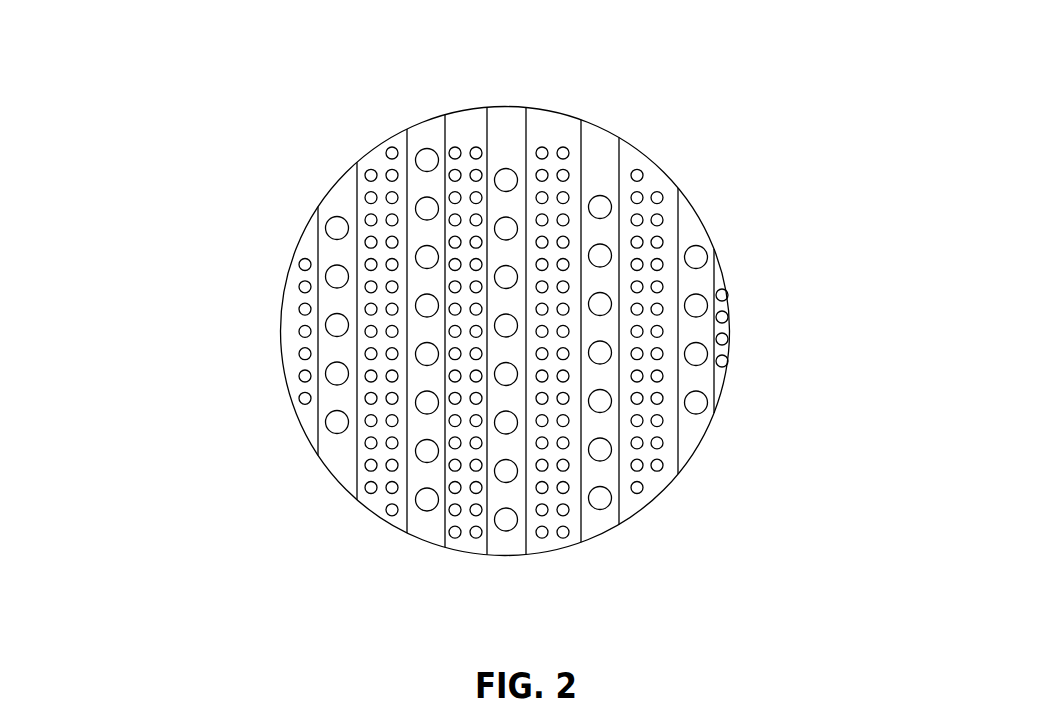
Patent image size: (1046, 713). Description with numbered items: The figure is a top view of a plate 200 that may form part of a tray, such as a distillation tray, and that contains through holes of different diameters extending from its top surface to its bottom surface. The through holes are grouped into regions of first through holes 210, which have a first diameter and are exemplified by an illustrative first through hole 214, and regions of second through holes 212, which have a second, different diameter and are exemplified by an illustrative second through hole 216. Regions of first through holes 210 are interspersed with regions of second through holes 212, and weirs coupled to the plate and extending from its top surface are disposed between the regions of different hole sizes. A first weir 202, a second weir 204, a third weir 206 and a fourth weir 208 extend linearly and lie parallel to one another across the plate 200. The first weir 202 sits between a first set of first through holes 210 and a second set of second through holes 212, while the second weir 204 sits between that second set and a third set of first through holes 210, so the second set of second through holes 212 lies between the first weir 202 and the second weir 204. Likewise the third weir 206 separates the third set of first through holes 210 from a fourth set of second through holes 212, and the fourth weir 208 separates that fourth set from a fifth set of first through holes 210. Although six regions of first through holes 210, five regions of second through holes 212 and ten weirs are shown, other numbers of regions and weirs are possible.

The plate 200 is at (411, 284).
The first weir 202 is at (487, 107).
The second weir 204 is at (526, 108).
The third weir 206 is at (581, 120).
The fourth weir 208 is at (619, 138).
The first through holes 210 is at (484, 138).
The second through holes 212 is at (523, 138).
The first through hole 214 is at (458, 537).
The second through hole 216 is at (604, 508).